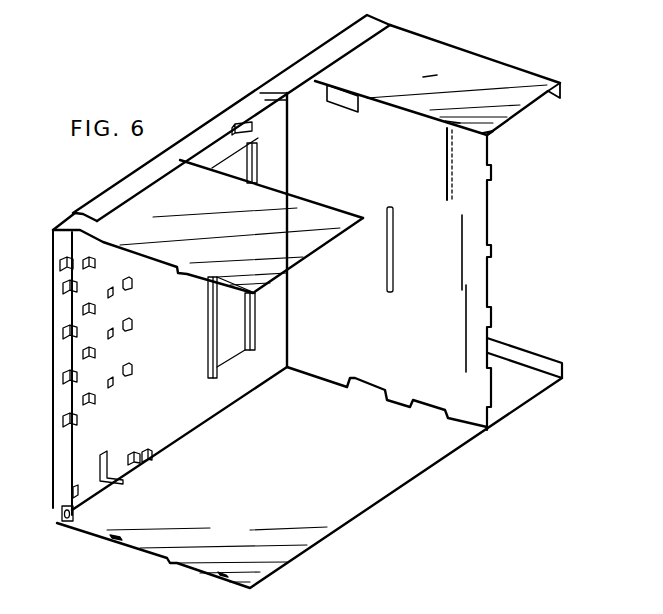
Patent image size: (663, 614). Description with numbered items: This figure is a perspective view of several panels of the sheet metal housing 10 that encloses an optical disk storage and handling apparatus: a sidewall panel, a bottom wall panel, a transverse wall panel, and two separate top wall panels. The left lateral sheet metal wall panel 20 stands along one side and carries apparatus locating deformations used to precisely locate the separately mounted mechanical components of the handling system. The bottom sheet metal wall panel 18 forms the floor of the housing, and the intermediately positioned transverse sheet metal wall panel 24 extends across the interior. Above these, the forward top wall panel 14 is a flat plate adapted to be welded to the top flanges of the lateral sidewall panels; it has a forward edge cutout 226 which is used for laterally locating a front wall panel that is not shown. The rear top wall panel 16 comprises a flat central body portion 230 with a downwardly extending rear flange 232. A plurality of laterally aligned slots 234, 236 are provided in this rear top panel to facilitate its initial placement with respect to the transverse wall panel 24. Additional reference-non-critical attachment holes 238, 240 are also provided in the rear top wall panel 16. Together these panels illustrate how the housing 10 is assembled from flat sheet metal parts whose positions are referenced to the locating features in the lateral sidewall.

The sheet metal housing 10 is at (520, 612).
The first top sheet metal wall panel 14 is at (133, 218).
The second top sheet metal wall panel 16 is at (380, 34).
The bottom sheet metal wall panel 18 is at (343, 500).
The left lateral sheet metal wall panel 20 is at (77, 436).
The transverse sheet metal wall panel 24 is at (473, 230).
The forward edge cutout 226 is at (186, 268).
The flat central body portion 230 is at (485, 79).
The rear flange 232 is at (562, 88).
The slot 234 is at (386, 100).
The slot 236 is at (448, 133).
The attachment hole 238 is at (408, 58).
The attachment hole 240 is at (455, 61).